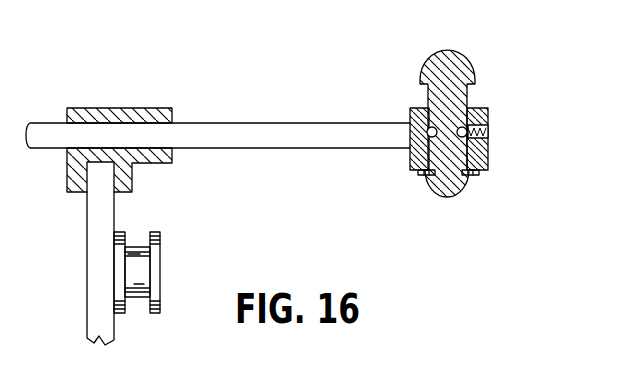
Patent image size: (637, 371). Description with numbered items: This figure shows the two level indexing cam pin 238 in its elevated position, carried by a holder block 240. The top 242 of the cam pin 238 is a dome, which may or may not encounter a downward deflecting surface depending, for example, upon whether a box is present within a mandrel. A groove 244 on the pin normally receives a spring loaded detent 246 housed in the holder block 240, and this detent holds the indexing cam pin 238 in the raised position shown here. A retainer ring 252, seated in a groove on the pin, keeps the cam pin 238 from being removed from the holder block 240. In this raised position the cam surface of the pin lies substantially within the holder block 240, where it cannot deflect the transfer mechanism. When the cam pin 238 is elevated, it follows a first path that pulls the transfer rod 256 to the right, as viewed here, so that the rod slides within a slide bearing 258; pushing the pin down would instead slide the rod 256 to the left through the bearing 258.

The indexing cam pin 238 is at (427, 109).
The holder block 240 is at (410, 155).
The top of the cam pin 242 is at (460, 52).
The groove 244 is at (410, 107).
The spring loaded detent 246 is at (482, 131).
The retainer ring 252 is at (474, 176).
The transfer rod 256 is at (248, 123).
The slide bearing 258 is at (128, 110).